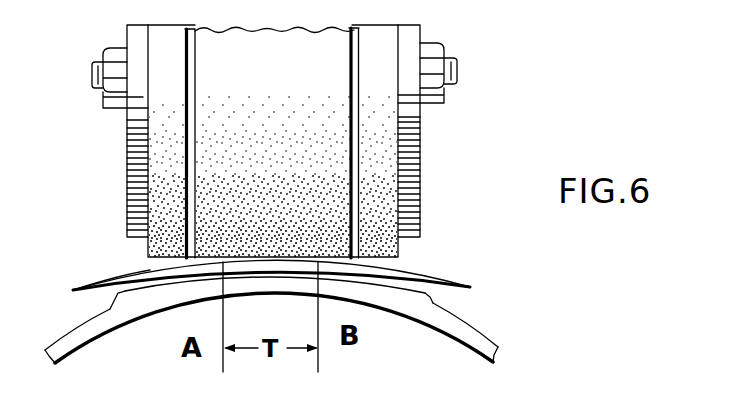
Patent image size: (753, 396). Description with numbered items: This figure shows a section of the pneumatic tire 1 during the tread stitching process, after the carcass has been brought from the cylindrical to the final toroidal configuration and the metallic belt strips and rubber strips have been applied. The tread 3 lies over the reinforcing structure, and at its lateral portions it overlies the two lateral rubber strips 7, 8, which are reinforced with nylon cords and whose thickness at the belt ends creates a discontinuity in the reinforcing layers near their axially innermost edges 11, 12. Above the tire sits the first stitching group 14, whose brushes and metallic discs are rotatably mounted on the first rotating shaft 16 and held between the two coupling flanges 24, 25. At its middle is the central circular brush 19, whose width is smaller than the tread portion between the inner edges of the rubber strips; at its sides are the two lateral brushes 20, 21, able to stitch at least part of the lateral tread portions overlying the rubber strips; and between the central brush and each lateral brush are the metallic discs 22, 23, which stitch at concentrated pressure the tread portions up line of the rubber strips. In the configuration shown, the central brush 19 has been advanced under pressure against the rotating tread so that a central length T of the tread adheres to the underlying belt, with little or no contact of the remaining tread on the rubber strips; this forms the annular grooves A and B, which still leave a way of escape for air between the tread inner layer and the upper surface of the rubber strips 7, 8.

The pneumatic tire 1 is at (480, 318).
The tread 3 is at (254, 263).
The lateral rubber strip 7 is at (408, 292).
The lateral rubber strip 8 is at (140, 290).
The axially innermost edge 11 is at (182, 279).
The axially innermost edge 12 is at (372, 280).
The first stitching group 14 is at (126, 198).
The first rotating shaft 16 is at (456, 71).
The central circular brush 19 is at (283, 87).
The lateral brush 20 is at (165, 118).
The lateral brush 21 is at (383, 121).
The metallic disc 22 is at (191, 47).
The metallic disc 23 is at (357, 44).
The coupling flange 24 is at (138, 157).
The coupling flange 25 is at (414, 169).